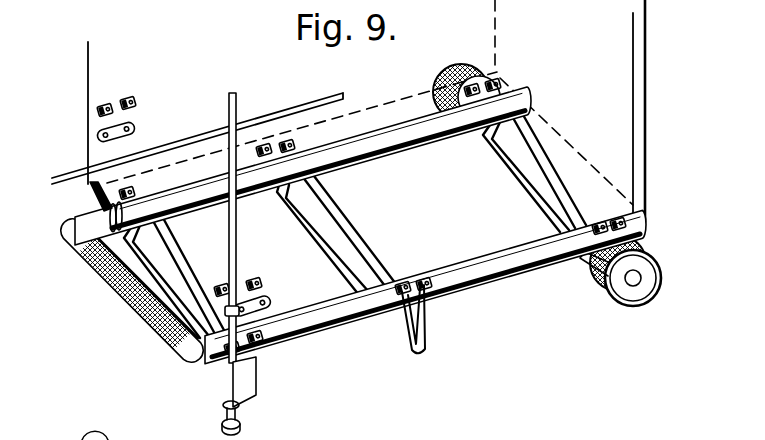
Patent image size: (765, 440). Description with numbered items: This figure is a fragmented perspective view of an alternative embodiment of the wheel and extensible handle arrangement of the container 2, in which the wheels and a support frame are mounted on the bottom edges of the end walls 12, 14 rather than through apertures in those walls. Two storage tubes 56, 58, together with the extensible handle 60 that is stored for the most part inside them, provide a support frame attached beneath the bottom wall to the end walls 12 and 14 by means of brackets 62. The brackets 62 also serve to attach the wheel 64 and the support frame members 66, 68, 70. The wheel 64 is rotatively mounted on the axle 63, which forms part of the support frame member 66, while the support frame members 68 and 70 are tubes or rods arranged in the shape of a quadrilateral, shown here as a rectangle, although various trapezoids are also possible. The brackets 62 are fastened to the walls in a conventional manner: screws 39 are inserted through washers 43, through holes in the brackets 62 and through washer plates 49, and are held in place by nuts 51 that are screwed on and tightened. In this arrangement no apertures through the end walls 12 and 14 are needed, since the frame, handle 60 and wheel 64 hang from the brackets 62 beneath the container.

The hand cart 2 is at (588, 180).
The end wall 12 is at (97, 84).
The end wall 14 is at (579, 112).
The screws 39 is at (241, 424).
The washers 43 is at (227, 402).
The washer plates 49 is at (270, 303).
The nuts 51 is at (260, 280).
The storage tube 56 is at (378, 124).
The storage tube 58 is at (487, 284).
The extensible handle 60 is at (66, 231).
The brackets 62 is at (90, 172).
The axle 63 is at (563, 198).
The wheel 64 is at (470, 56).
The support frame member 66 is at (582, 258).
The support frame member 68 is at (410, 318).
The support frame member 70 is at (257, 398).